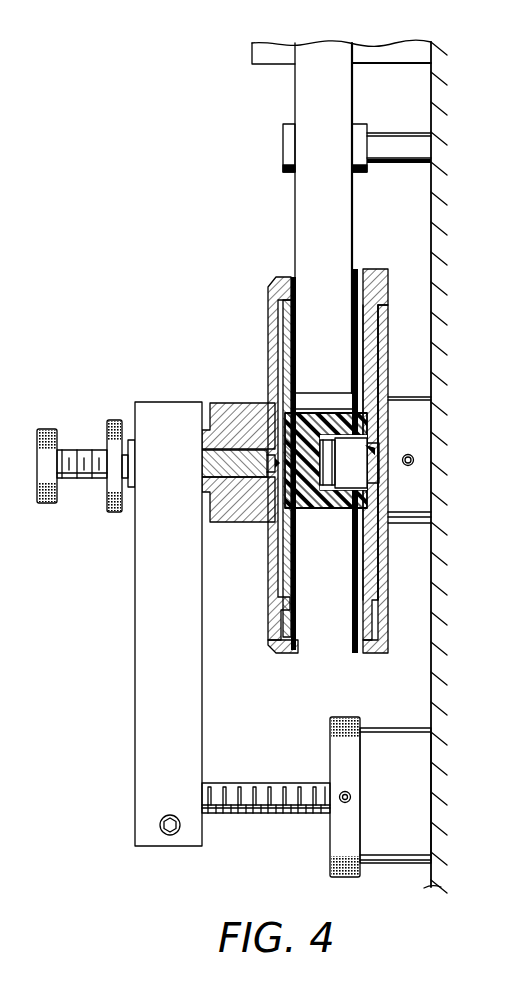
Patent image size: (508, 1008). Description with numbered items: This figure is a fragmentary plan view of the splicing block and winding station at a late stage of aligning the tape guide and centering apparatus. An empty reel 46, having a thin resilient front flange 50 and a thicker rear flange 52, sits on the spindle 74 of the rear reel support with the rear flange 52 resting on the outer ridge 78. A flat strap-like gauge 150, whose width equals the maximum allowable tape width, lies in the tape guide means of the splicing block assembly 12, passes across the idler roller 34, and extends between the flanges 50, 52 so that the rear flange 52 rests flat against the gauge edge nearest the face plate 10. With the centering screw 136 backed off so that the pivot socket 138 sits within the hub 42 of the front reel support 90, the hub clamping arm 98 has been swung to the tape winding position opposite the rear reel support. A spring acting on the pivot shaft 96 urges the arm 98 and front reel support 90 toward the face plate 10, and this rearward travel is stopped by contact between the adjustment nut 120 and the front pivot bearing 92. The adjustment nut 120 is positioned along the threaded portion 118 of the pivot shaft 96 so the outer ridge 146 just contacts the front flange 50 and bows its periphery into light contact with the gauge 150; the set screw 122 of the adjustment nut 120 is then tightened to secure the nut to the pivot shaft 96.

The face plate 10 is at (431, 105).
The splicing block assembly 12 is at (248, 62).
The idler roller 34 is at (283, 152).
The gauge 150 is at (295, 205).
The front flange 50 is at (297, 276).
The rear flange 52 is at (353, 272).
The outer ridge 78 is at (368, 277).
The front reel support 90 is at (263, 386).
The pivot socket 138 is at (251, 408).
The hub 42 is at (249, 522).
The centering screw 136 is at (50, 429).
The spindle 74 is at (381, 456).
The outer ridge 146 is at (286, 655).
The reel 46 is at (332, 638).
The hub clamping arm 98 is at (135, 695).
The threaded portion 118 is at (267, 783).
The set screw 122 is at (341, 791).
The pivot shaft 96 is at (264, 815).
The adjustment nut 120 is at (330, 836).
The pivot bearing 92 is at (410, 852).